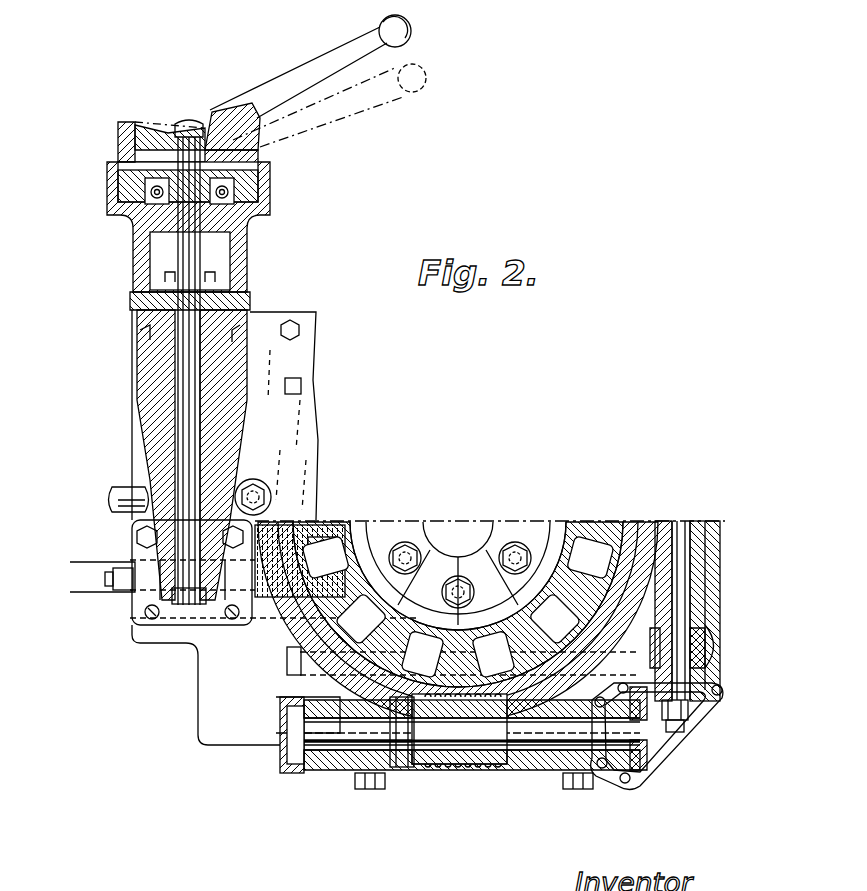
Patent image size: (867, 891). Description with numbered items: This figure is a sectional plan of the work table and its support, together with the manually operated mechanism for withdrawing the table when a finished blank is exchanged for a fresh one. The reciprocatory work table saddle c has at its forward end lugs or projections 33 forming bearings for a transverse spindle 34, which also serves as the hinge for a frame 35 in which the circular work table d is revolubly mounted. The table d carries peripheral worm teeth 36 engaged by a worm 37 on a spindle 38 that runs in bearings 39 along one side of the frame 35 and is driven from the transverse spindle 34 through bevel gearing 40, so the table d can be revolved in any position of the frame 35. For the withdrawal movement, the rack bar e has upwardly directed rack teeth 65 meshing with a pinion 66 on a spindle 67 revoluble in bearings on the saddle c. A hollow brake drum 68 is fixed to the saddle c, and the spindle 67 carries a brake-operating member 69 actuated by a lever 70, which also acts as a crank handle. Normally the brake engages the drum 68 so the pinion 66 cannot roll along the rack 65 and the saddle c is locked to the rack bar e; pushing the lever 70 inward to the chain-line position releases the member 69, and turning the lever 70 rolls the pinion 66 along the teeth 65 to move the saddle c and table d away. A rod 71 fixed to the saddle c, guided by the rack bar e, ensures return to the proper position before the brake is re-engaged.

The lever 70 is at (318, 78).
The brake-operating member 69 is at (133, 151).
The hollow brake drum 68 is at (262, 188).
The spindle 67 is at (186, 367).
The pinion 66 is at (172, 583).
The rack teeth 65 is at (337, 560).
The rod 71 is at (110, 566).
The frame 35 is at (298, 627).
The transverse spindle 34 is at (670, 607).
The lugs or projections 33 is at (697, 648).
The bevel gearing 40 is at (643, 763).
The peripheral worm teeth 36 is at (510, 693).
The worm 37 is at (460, 762).
The spindle 38 is at (583, 727).
The bearings 39 is at (533, 777).
The work table saddle c is at (268, 326).
The circular work table d is at (385, 655).
The rack bar e is at (93, 592).